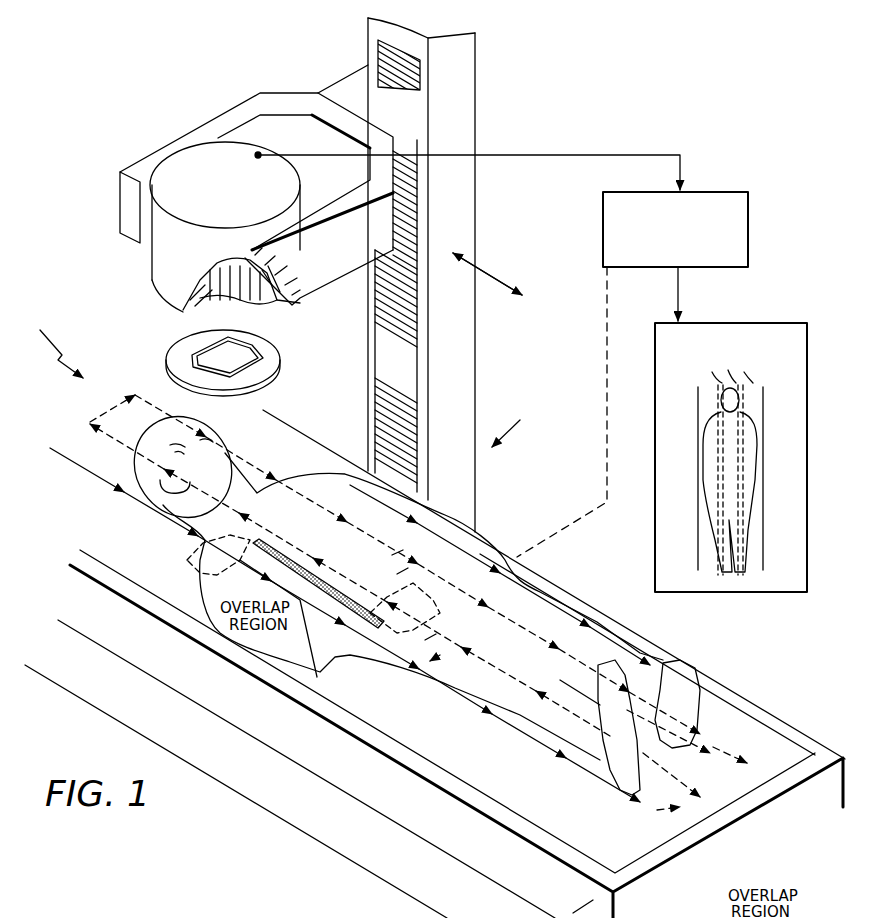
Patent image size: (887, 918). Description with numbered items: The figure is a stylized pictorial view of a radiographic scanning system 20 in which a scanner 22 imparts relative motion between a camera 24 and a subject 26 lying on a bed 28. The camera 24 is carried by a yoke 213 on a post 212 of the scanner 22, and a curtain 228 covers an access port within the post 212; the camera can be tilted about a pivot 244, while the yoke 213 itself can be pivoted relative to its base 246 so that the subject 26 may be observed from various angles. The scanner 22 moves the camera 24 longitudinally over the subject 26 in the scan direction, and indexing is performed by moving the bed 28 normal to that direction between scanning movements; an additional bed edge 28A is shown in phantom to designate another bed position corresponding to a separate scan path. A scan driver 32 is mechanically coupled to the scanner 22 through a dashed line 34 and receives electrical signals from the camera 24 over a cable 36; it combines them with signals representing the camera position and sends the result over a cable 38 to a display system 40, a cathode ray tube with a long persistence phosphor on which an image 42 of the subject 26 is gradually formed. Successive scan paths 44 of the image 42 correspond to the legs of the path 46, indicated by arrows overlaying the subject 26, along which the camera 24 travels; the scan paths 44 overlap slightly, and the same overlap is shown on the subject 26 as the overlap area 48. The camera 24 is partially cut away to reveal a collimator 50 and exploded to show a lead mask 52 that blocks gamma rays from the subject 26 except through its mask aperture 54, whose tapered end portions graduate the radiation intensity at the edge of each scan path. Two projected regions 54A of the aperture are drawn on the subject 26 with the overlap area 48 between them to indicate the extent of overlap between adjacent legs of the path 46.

The radiographic scanning system 20 is at (50, 342).
The scanner 22 is at (499, 350).
The camera 24 is at (170, 165).
The subject 26 is at (535, 728).
The bed 28 is at (632, 878).
The bed edge 28A is at (572, 910).
The scan driver 32 is at (603, 216).
The dashed line 34 is at (560, 525).
The cable 36 is at (523, 157).
The cable 38 is at (680, 290).
The display system 40 is at (807, 478).
The image 42 is at (757, 418).
The scan paths 44 is at (710, 375).
The path 46 is at (68, 462).
The overlap area 48 is at (333, 597).
The collimator 50 is at (232, 300).
The mask 52 is at (175, 348).
The mask aperture 54 is at (240, 352).
The field of view 54A is at (187, 558).
The post 212 is at (473, 370).
The yoke 213 is at (120, 168).
The curtain 228 is at (407, 313).
The pivot 244 is at (278, 266).
The base 246 is at (413, 100).